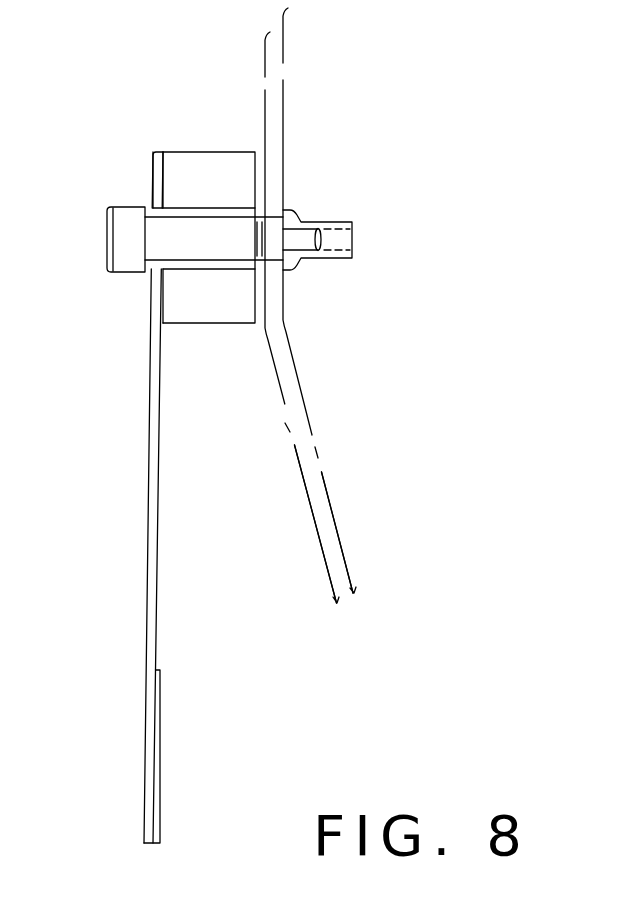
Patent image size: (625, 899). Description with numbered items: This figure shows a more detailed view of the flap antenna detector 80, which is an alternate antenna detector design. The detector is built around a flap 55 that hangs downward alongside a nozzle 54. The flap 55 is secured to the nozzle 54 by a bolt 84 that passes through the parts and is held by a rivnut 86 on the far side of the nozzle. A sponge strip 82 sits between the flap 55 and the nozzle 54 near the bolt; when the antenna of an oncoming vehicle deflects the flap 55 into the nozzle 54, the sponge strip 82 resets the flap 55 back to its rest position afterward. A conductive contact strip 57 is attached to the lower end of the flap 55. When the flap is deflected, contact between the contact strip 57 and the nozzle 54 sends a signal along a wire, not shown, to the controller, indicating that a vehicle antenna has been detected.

The flap antenna detector 80 is at (505, 738).
The nozzle 54 is at (324, 484).
The sponge strip 82 is at (186, 166).
The bolt 84 is at (105, 239).
The rivnut 86 is at (352, 262).
The flap 55 is at (148, 448).
The conductive contact strip 57 is at (160, 758).